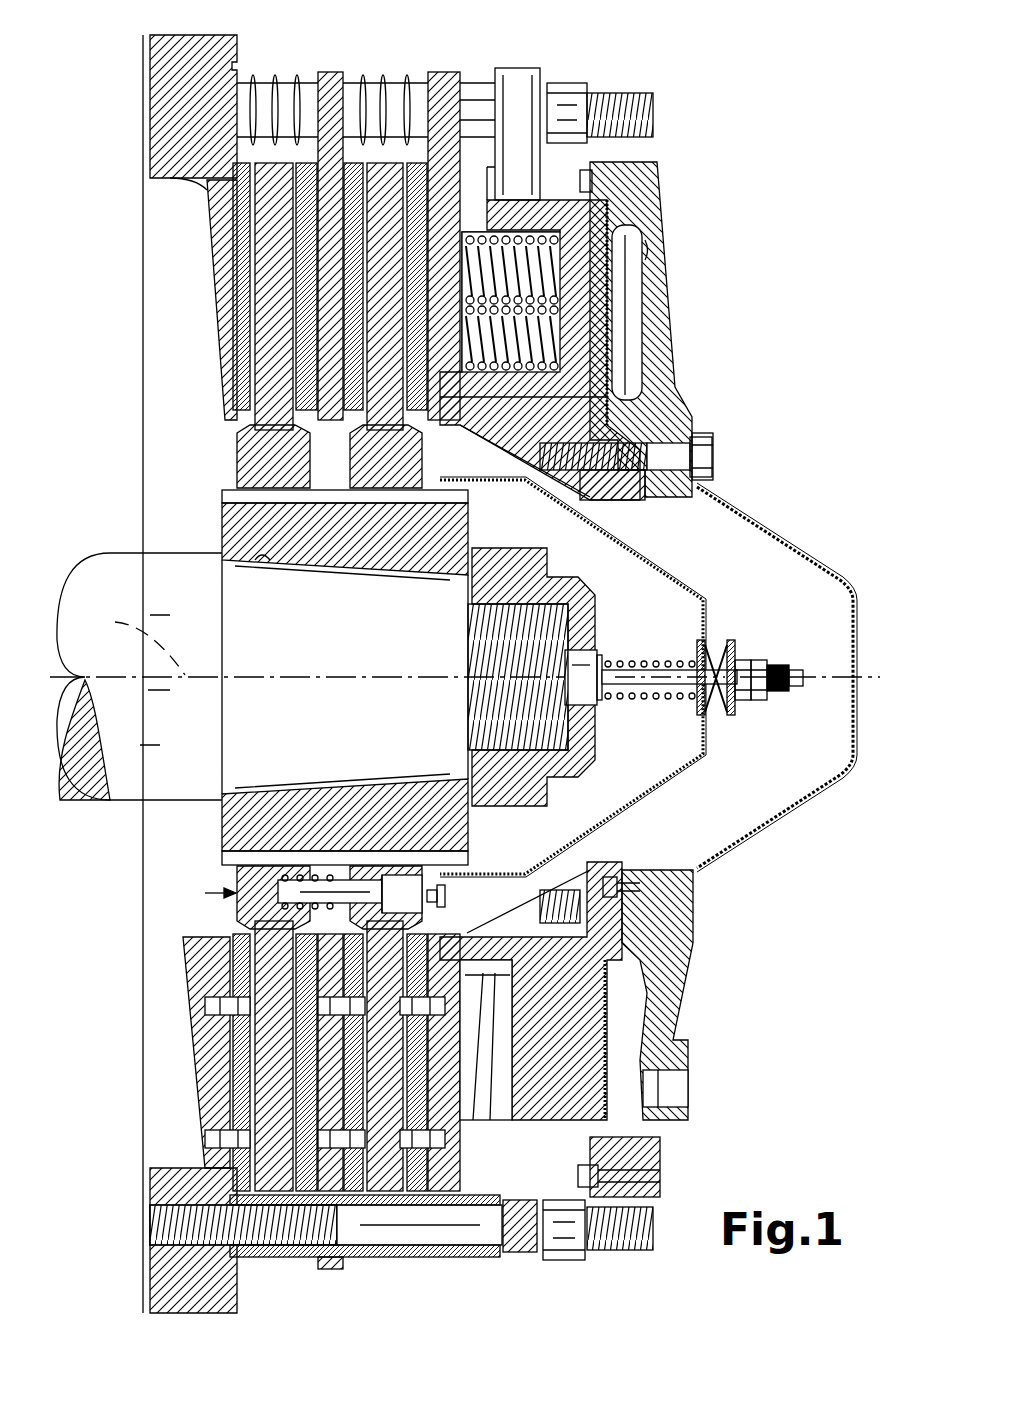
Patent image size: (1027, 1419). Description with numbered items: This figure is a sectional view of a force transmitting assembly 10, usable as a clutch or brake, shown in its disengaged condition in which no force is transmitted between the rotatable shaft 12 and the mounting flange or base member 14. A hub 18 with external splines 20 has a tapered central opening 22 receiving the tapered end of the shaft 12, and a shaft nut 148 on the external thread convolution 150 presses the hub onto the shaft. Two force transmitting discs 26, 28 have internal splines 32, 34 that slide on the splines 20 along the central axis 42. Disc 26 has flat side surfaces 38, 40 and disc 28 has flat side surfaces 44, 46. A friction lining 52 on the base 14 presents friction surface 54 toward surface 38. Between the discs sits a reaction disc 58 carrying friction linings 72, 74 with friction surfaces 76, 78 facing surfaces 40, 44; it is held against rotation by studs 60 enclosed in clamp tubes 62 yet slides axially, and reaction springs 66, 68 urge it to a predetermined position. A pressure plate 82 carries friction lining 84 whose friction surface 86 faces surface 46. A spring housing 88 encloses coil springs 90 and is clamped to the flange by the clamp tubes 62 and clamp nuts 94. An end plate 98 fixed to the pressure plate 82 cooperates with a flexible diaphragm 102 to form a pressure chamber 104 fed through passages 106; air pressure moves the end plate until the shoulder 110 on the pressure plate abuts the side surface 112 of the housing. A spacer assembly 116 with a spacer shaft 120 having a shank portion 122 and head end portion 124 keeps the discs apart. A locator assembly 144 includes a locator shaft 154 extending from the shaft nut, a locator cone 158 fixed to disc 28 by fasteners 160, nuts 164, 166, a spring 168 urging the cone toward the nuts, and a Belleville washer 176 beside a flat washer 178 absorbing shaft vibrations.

The force transmitting assembly 10 is at (780, 232).
The rotatable shaft 12 is at (112, 570).
The mounting flange or base member 14 is at (148, 128).
The hub or inner member 18 is at (358, 536).
The external splines or teeth 20 is at (468, 497).
The axially tapered central opening 22 is at (268, 562).
The force transmitting disc 26 is at (276, 160).
The force transmitting disc 28 is at (370, 160).
The internal splines 32 is at (240, 862).
The internal splines 34 is at (470, 842).
The flat annular side surface 38 is at (232, 1100).
The flat annular side surface 40 is at (290, 1070).
The central axis 42 is at (128, 624).
The flat annular side surface 44 is at (415, 1258).
The flat annular side surface 46 is at (460, 1258).
The annular friction lining 52 is at (220, 1060).
The flat annular friction surface 54 is at (230, 1015).
The reaction disc 58 is at (330, 72).
The studs 60 is at (653, 112).
The clamp tubes 62 is at (480, 98).
The reaction spring 66 is at (252, 75).
The reaction spring 68 is at (436, 72).
The annular friction lining 72 is at (302, 1200).
The annular friction lining 74 is at (348, 1205).
The flat annular friction surface 76 is at (290, 1065).
The flat annular friction surface 78 is at (380, 1068).
The pressure plate 82 is at (453, 72).
The annular friction lining 84 is at (510, 1090).
The flat annular friction surface 86 is at (495, 1010).
The spring housing 88 is at (588, 350).
The helical coil springs 90 is at (550, 315).
The clamp nuts 94 is at (565, 90).
The end plate 98 is at (660, 345).
The flexible diaphragm 102 is at (640, 370).
The pressure chamber 104 is at (650, 1060).
The passages 106 is at (680, 1092).
The annular shoulder 110 is at (500, 412).
The annular side surface 112 is at (528, 470).
The spacer assembly 116 is at (205, 893).
The spacer shaft or shoulder screw 120 is at (330, 880).
The cylindrical shank portion 122 is at (300, 870).
The cylindrical head end portion 124 is at (395, 870).
The locator assembly 144 is at (745, 612).
The shaft nut 148 is at (585, 598).
The external thread convolution 150 is at (490, 637).
The locator shaft 154 is at (662, 668).
The locator cone or force transmitting member 158 is at (628, 808).
The fasteners 160 is at (447, 897).
The nut 164 is at (743, 700).
The nut 166 is at (758, 702).
The helical coil spring 168 is at (625, 700).
The Belleville washer 176 is at (735, 640).
The flat washer 178 is at (717, 640).